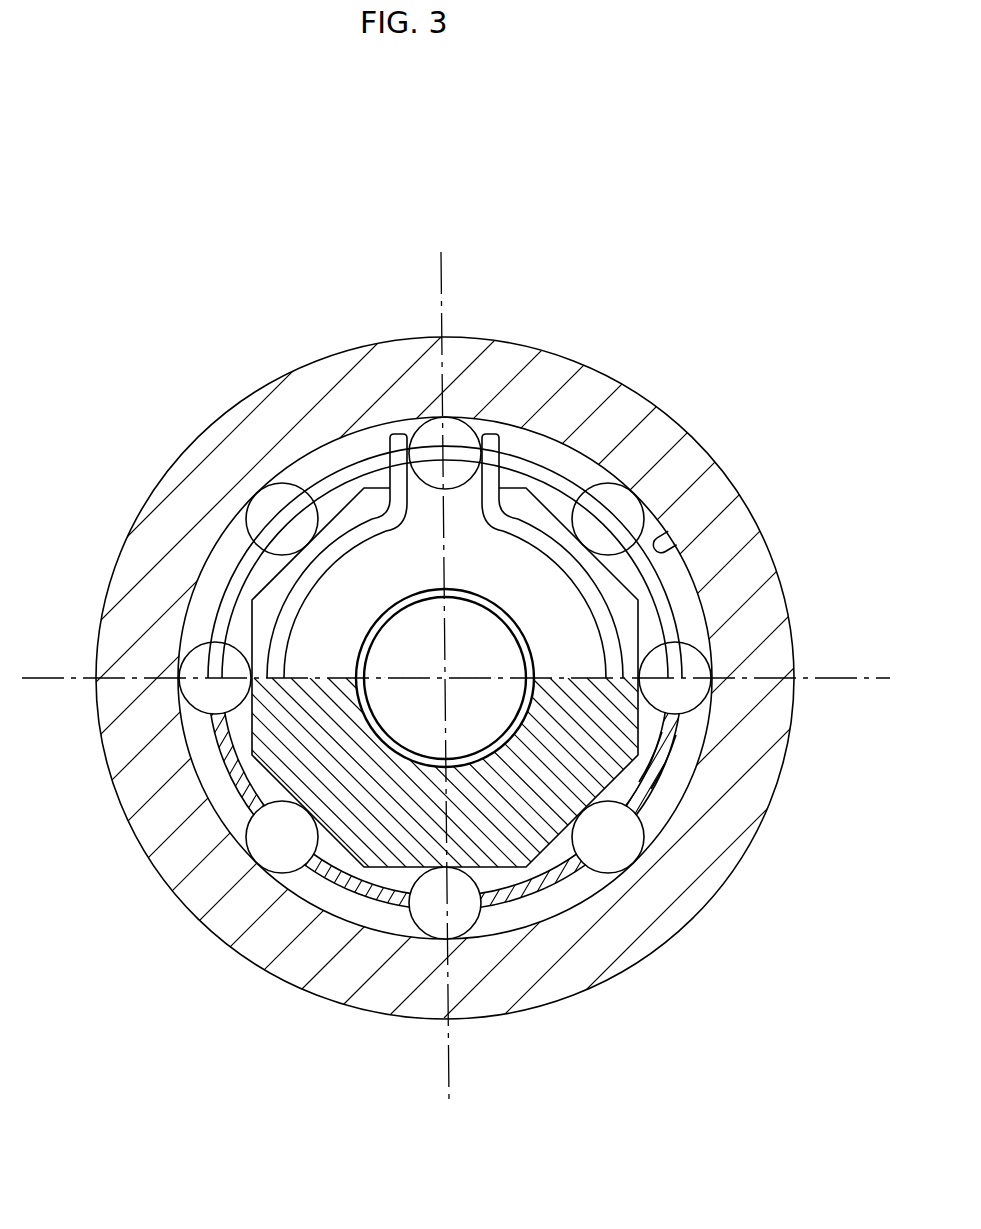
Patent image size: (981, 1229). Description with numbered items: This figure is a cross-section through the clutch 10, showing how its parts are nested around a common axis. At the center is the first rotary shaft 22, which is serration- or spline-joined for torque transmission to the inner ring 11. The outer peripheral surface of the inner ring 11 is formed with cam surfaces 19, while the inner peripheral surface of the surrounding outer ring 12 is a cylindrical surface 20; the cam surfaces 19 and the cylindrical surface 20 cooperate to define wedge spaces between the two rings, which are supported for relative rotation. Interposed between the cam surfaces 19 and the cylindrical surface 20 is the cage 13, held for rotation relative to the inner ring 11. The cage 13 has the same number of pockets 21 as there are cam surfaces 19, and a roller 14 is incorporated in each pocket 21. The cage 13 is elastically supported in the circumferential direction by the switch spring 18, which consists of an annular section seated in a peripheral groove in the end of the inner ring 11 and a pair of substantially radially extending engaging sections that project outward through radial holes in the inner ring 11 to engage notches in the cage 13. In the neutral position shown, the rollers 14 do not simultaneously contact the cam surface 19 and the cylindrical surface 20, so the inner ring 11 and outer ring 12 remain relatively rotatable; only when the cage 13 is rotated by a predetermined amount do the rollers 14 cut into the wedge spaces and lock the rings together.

The clutch 10 is at (278, 312).
The inner ring 11 is at (500, 560).
The outer ring 12 is at (187, 508).
The cage 13 is at (540, 887).
The roller 14 is at (283, 838).
The switch spring 18 is at (400, 473).
The cam surface 19 is at (345, 505).
The cylindrical surface 20 is at (663, 528).
The pocket 21 is at (640, 803).
The first rotary shaft 22 is at (415, 705).